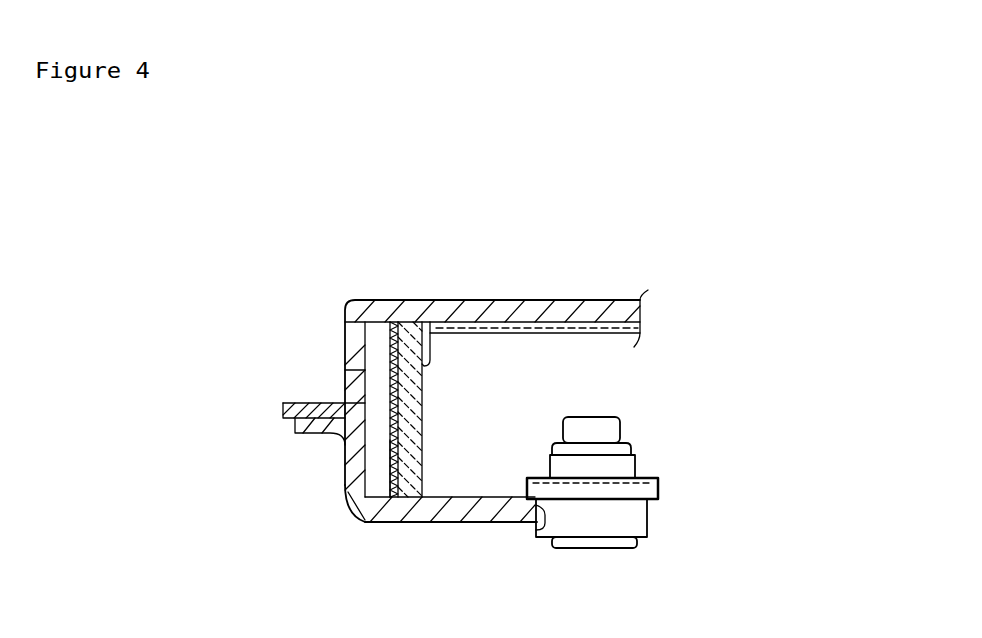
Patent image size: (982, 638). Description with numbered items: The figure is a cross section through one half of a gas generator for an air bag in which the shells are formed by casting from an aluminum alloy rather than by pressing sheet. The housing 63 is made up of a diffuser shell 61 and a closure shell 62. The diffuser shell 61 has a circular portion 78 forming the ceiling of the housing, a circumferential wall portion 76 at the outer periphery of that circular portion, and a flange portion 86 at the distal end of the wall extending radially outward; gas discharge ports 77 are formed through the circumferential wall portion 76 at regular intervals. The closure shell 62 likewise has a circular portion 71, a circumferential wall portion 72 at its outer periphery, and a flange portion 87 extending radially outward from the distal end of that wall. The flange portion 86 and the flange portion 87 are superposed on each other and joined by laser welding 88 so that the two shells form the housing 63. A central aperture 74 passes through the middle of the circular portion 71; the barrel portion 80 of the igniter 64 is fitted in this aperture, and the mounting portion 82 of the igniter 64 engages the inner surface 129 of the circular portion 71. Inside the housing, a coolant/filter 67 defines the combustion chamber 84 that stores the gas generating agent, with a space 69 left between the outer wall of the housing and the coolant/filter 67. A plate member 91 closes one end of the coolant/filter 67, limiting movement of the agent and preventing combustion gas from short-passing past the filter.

The diffuser shell 61 is at (362, 294).
The closure shell 62 is at (473, 525).
The housing 63 is at (498, 555).
The igniter 64 is at (639, 455).
The coolant/filter 67 is at (346, 492).
The space 69 is at (378, 342).
The circular portion 71 is at (405, 525).
The circumferential wall portion 72 is at (382, 475).
The central aperture 74 is at (545, 533).
The circumferential wall portion 76 is at (345, 402).
The gas discharge ports 77 is at (347, 365).
The circular portion 78 is at (398, 310).
The barrel portion 80 is at (618, 522).
The mounting portion 82 is at (527, 497).
The combustion chamber 84 is at (523, 358).
The flange portion 86 is at (300, 402).
The flange portion 87 is at (303, 436).
The laser welding 88 is at (301, 414).
The plate member 91 is at (614, 312).
The inner surface 129 is at (447, 497).